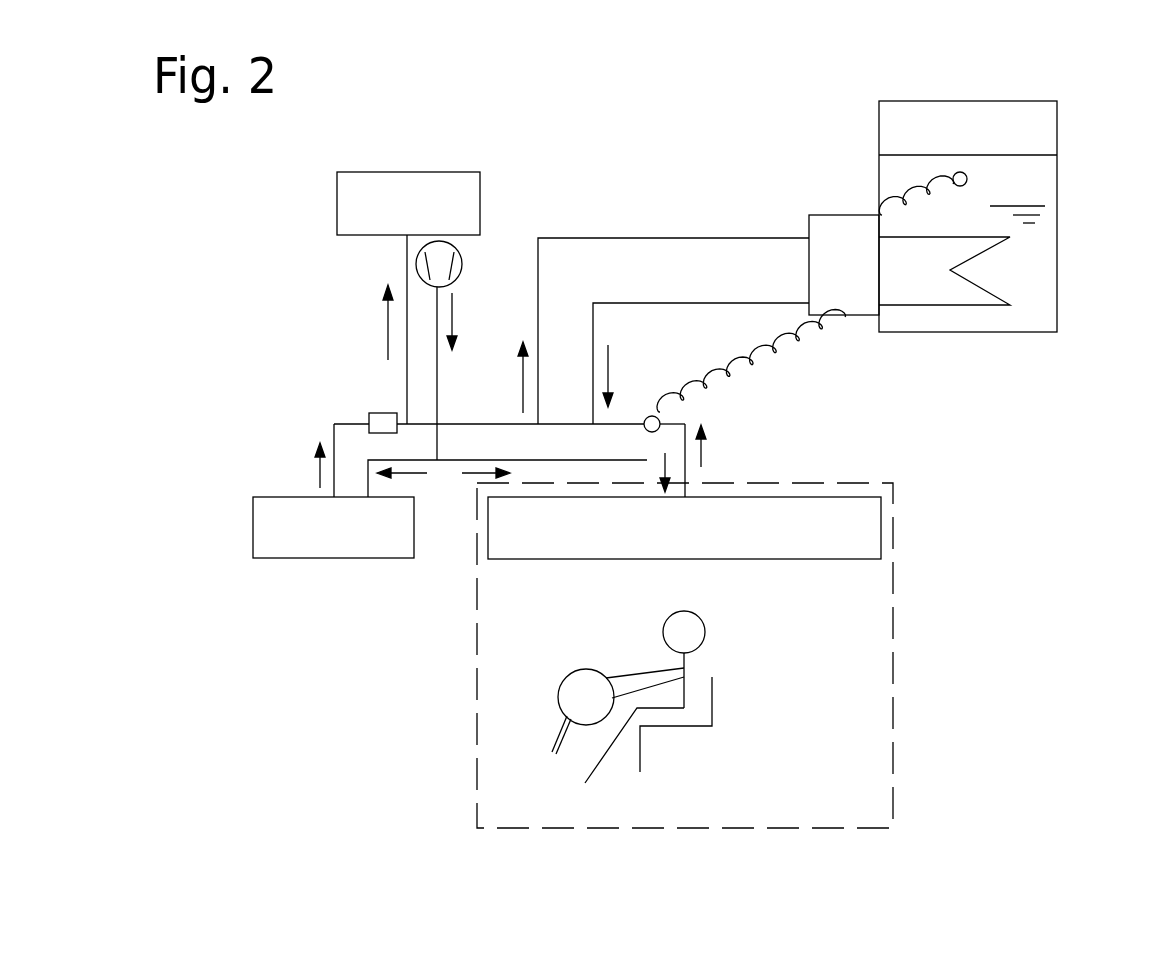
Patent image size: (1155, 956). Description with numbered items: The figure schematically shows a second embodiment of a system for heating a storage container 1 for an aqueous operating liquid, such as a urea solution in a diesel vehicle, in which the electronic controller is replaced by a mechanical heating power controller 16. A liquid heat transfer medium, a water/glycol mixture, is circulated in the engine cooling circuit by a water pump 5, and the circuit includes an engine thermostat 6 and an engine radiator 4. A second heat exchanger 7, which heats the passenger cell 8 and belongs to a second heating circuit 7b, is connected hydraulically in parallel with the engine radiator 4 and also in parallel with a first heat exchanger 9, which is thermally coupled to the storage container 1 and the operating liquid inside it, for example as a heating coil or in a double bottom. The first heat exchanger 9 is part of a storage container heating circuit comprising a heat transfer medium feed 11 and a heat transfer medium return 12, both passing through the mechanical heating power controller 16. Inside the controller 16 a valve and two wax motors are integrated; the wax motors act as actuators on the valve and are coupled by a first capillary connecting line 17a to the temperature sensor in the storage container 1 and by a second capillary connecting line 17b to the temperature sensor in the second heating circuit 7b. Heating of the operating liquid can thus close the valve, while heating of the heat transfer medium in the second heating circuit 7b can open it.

The storage container 1 is at (1057, 168).
The engine radiator 4 is at (360, 558).
The water pump 5 is at (463, 262).
The engine thermostat 6 is at (383, 418).
The second heat exchanger 7 is at (560, 588).
The second heating circuit 7b is at (685, 458).
The passenger cell 8 is at (893, 668).
The first heat exchanger 9 is at (995, 290).
The heat transfer medium feed 11 is at (665, 237).
The heat transfer medium return 12 is at (682, 303).
The mechanical heating power controller 16 is at (838, 220).
The first capillary connecting line 17a is at (930, 190).
The second capillary connecting line 17b is at (797, 353).